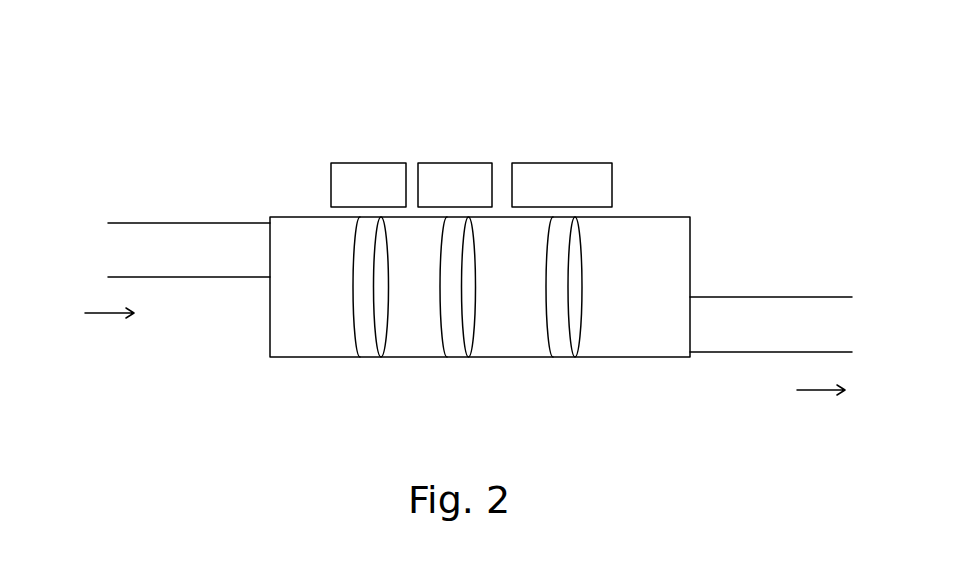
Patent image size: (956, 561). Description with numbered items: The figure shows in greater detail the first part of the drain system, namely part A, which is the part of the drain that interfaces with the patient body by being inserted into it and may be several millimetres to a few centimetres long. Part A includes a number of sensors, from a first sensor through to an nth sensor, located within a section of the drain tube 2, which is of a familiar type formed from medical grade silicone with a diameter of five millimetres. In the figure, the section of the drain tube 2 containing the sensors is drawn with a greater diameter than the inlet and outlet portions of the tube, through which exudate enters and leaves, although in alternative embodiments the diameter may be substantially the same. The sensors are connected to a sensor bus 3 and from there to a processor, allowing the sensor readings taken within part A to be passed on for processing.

The drain tube 2 is at (700, 203).
The sensor bus 3 is at (560, 163).
The part A of the drain system A is at (694, 102).